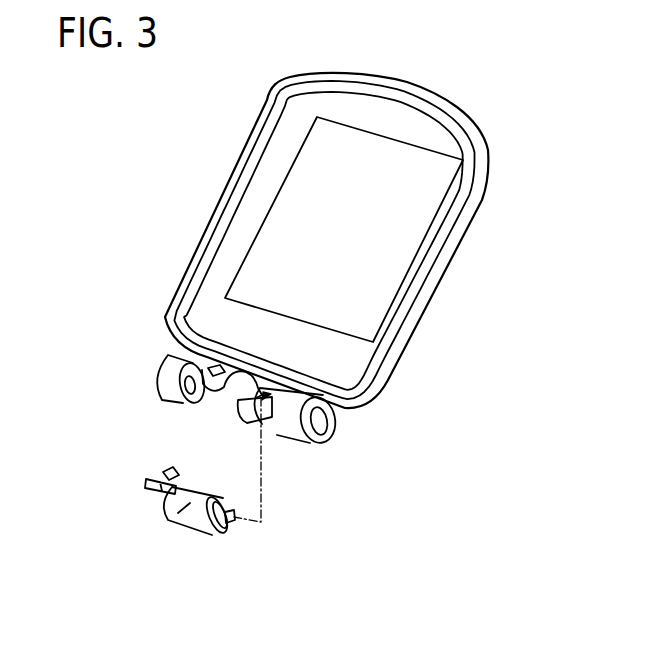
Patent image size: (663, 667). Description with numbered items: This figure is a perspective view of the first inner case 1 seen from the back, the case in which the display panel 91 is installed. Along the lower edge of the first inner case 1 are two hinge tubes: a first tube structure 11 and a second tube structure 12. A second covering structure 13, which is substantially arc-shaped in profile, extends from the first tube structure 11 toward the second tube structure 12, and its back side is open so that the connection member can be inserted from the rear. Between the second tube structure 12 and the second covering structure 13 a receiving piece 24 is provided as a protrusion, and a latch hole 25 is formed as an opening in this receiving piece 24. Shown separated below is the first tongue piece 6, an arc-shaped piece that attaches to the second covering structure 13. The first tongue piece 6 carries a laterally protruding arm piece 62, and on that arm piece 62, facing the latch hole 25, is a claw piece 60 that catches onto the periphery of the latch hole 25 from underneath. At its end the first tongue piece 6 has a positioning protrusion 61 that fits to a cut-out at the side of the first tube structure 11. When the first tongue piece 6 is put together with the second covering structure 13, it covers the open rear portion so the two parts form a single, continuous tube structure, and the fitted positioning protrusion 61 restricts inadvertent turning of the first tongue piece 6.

The first inner case 1 is at (466, 234).
The display panel 91 is at (408, 177).
The latch hole 25 is at (217, 364).
The second tube structure 12 is at (158, 367).
The receiving piece 24 is at (218, 393).
The first tube structure 11 is at (286, 420).
The second covering structure 13 is at (248, 418).
The first tongue piece 6 is at (168, 523).
The claw piece 60 is at (165, 470).
The positioning protrusion 61 is at (228, 523).
The arm piece 62 is at (148, 484).